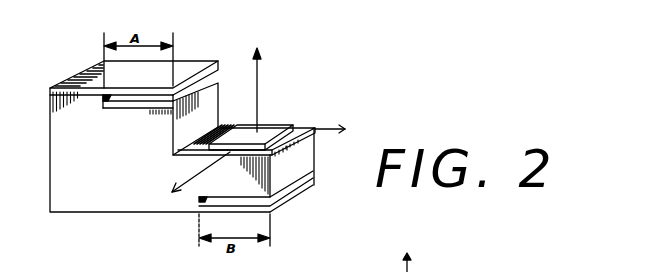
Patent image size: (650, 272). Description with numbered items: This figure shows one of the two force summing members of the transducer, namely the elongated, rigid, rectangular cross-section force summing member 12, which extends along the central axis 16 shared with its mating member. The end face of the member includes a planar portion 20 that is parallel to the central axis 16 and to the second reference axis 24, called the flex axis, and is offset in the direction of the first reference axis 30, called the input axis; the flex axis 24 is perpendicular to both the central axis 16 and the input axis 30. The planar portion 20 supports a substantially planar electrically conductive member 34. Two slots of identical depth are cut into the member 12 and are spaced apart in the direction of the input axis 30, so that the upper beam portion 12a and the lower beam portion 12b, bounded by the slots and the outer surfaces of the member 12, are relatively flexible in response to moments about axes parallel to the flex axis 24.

The force summing member 12 is at (94, 227).
The upper beam portion 12a is at (192, 63).
The lower beam portion 12b is at (243, 208).
The planar portion 20 is at (303, 128).
The electrically conductive member 34 is at (273, 122).
The first reference axis 30 is at (258, 78).
The central axis 16 is at (335, 135).
The second reference axis 24 is at (187, 181).